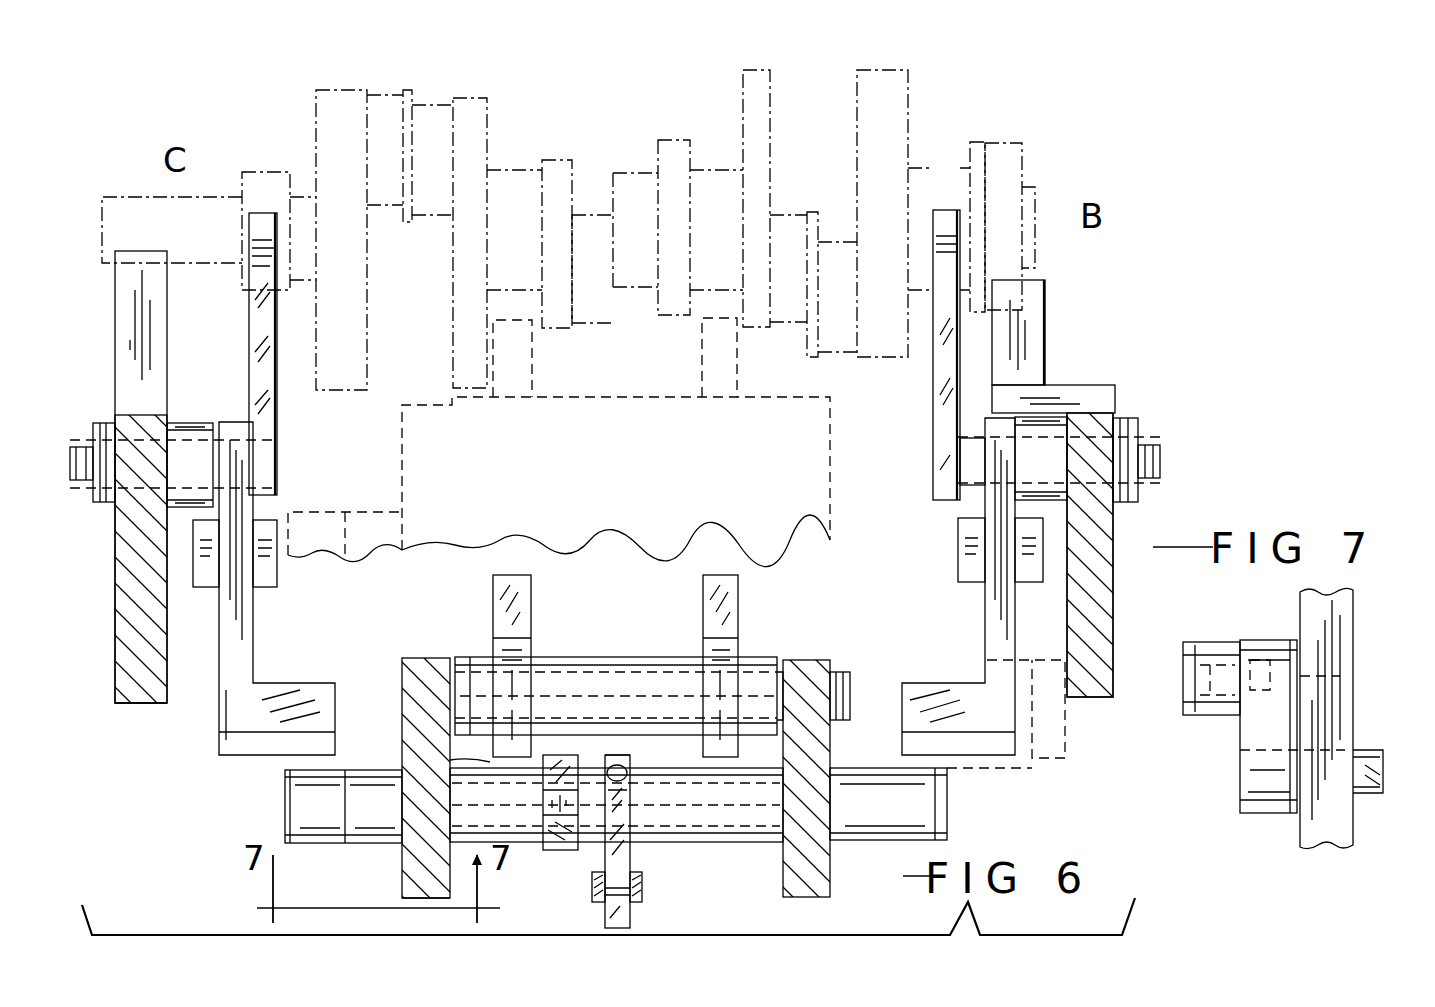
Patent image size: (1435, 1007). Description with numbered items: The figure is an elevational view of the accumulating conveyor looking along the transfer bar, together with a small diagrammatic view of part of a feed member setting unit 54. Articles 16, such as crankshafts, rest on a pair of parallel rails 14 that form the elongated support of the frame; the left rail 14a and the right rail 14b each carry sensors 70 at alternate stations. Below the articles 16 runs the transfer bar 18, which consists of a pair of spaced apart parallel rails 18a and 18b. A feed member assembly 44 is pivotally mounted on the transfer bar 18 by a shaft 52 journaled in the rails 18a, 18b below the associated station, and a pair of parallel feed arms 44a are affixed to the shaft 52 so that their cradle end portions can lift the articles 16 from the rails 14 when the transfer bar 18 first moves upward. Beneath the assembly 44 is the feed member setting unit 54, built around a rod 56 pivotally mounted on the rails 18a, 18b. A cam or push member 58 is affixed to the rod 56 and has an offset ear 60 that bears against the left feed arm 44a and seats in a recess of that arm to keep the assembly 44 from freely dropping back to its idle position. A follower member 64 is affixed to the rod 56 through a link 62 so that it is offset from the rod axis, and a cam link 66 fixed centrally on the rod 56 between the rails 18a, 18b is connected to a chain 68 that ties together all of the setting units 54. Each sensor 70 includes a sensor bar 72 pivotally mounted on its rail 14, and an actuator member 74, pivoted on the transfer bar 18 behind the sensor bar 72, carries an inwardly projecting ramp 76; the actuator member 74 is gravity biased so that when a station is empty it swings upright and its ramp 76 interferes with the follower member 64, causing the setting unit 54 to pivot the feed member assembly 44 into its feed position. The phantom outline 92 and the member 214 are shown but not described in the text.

In FIG. 6, the rails 14 is at (133, 703).
In FIG. 6, the rail 14a is at (167, 376).
In FIG. 6, the rail 14b is at (1045, 365).
In FIG. 6, the articles 16 is at (563, 158).
In FIG. 6, the transfer bar 18 is at (402, 880).
In FIG. 7, the transfer bar 18 is at (1353, 680).
In FIG. 6, the rail 18a is at (426, 898).
In FIG. 6, the rail 18b is at (822, 898).
In FIG. 6, the feed member assembly 44 is at (745, 352).
In FIG. 6, the feed arms 44a is at (531, 610).
In FIG. 6, the shaft 52 is at (600, 657).
In FIG. 6, the feed member setting unit 54 is at (548, 880).
In FIG. 6, the rod 56 is at (705, 842).
In FIG. 7, the rod 56 is at (1365, 752).
In FIG. 6, the push member 58 is at (575, 760).
In FIG. 6, the offset ear 60 is at (450, 760).
In FIG. 7, the link 62 is at (1240, 740).
In FIG. 6, the follower member 64 is at (305, 797).
In FIG. 7, the follower member 64 is at (1195, 715).
In FIG. 6, the cam link 66 is at (630, 868).
In FIG. 6, the chain 68 is at (595, 890).
In FIG. 6, the sensor 70 is at (290, 398).
In FIG. 6, the sensor bar 72 is at (277, 313).
In FIG. 6, the actuator member 74 is at (253, 616).
In FIG. 6, the ramp 76 is at (300, 683).
In FIG. 6, the phantom bracket 92 is at (1012, 764).
In FIG. 6, the link member 214 is at (1116, 615).